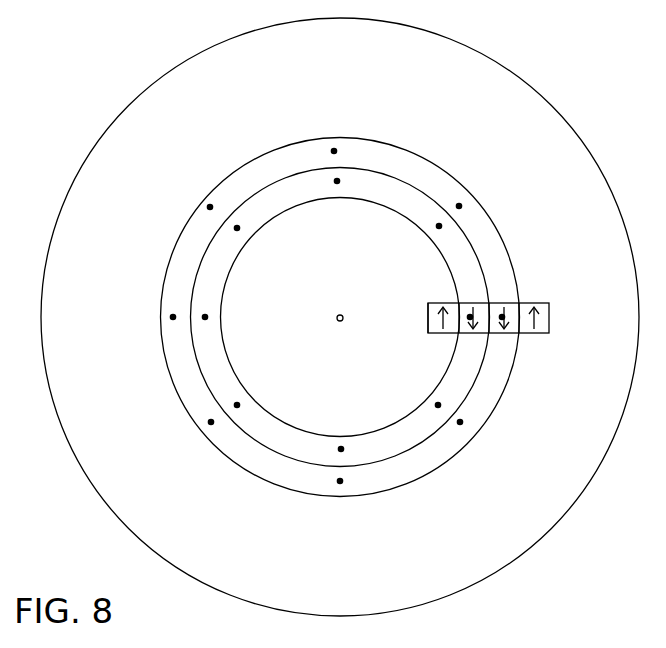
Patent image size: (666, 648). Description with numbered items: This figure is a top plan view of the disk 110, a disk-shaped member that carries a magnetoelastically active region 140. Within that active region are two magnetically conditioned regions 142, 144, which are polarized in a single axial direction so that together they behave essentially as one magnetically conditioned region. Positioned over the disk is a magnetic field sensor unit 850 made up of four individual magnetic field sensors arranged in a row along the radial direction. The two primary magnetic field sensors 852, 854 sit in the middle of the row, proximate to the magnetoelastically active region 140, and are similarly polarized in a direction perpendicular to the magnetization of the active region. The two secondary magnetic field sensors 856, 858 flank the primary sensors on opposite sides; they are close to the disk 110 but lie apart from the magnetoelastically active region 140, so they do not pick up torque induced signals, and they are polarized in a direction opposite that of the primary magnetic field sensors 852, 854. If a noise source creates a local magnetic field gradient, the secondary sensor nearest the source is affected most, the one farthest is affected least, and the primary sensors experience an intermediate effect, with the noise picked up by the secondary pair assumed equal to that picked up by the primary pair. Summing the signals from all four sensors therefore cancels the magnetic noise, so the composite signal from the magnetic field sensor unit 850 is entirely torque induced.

The disk 110 is at (516, 49).
The magnetoelastically active region 140 is at (413, 372).
The magnetically conditioned region 142 is at (395, 435).
The magnetically conditioned region 144 is at (477, 412).
The magnetic field sensor unit 850 is at (491, 317).
The primary magnetic field sensor 852 is at (465, 308).
The primary magnetic field sensor 854 is at (513, 327).
The secondary magnetic field sensor 856 is at (432, 318).
The secondary magnetic field sensor 858 is at (543, 318).